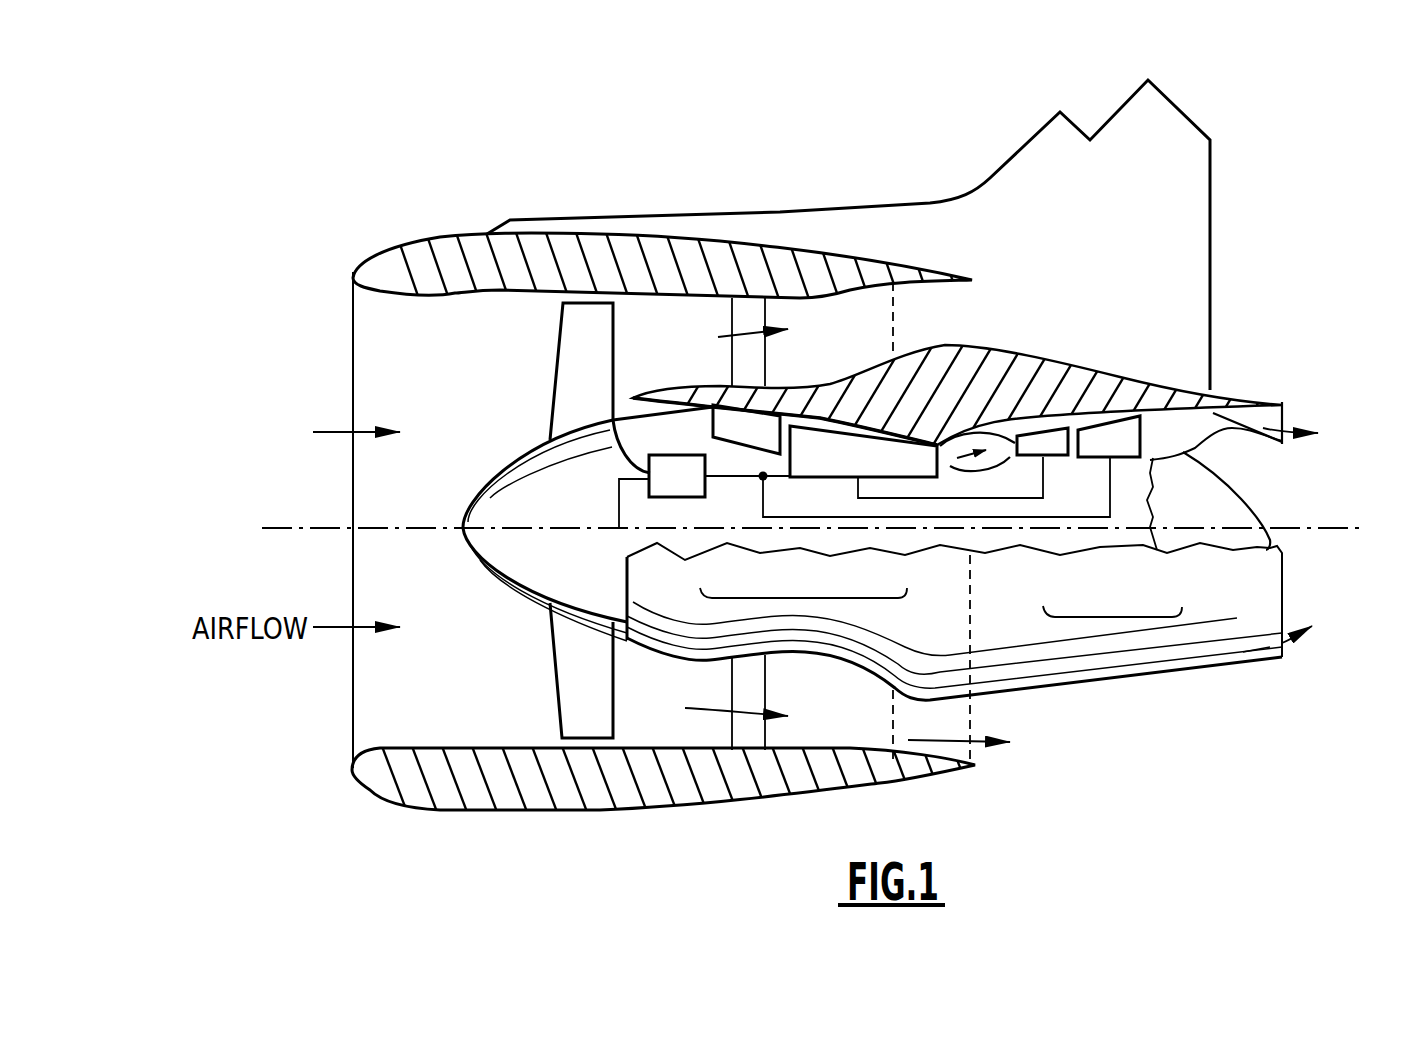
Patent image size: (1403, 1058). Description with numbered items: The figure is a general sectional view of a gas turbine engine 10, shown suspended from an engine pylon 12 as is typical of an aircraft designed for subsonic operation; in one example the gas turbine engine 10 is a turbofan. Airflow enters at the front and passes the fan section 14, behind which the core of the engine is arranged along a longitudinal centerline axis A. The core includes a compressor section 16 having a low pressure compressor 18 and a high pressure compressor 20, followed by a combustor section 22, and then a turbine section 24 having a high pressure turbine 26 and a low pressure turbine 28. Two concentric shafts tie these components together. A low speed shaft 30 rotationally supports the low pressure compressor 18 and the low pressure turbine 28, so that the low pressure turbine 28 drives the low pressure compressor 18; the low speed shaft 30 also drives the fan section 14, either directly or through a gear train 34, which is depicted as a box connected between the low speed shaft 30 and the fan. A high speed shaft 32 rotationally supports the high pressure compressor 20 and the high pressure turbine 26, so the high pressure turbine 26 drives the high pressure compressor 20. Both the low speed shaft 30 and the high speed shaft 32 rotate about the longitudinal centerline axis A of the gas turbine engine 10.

The gas turbine engine 10 is at (385, 198).
The engine pylon 12 is at (1155, 142).
The fan section 14 is at (556, 692).
The compressor section 16 is at (810, 600).
The low pressure compressor 18 is at (747, 455).
The high pressure compressor 20 is at (840, 458).
The combustor section 22 is at (990, 472).
The turbine section 24 is at (1113, 617).
The high pressure turbine 26 is at (1057, 458).
The low pressure turbine 28 is at (1125, 460).
The low speed shaft 30 is at (893, 517).
The high speed shaft 32 is at (955, 500).
The gear train 34 is at (698, 491).
The longitudinal centerline axis A is at (1363, 528).